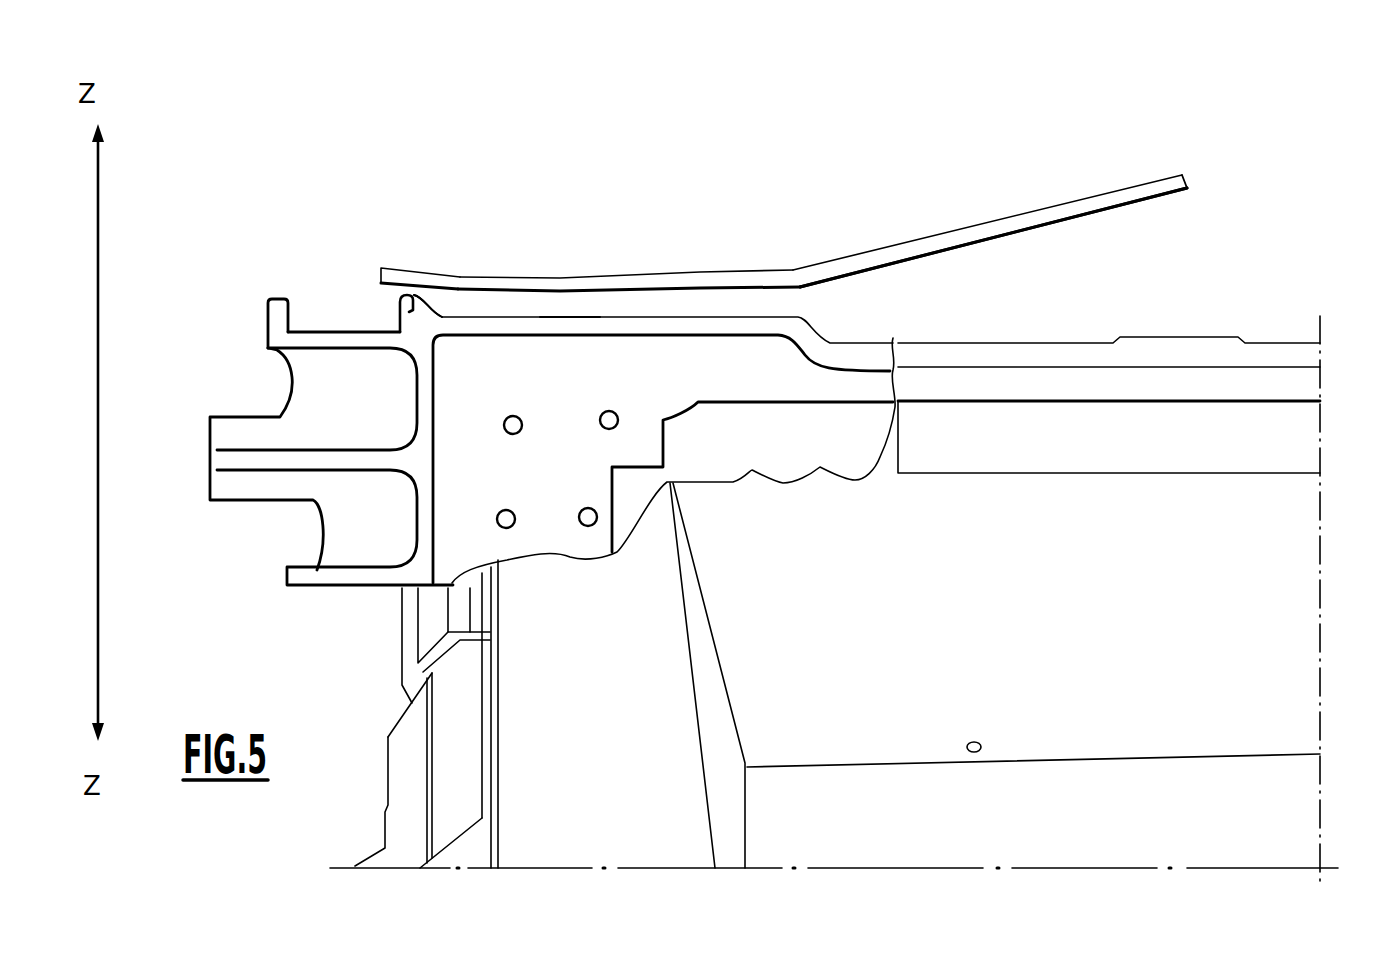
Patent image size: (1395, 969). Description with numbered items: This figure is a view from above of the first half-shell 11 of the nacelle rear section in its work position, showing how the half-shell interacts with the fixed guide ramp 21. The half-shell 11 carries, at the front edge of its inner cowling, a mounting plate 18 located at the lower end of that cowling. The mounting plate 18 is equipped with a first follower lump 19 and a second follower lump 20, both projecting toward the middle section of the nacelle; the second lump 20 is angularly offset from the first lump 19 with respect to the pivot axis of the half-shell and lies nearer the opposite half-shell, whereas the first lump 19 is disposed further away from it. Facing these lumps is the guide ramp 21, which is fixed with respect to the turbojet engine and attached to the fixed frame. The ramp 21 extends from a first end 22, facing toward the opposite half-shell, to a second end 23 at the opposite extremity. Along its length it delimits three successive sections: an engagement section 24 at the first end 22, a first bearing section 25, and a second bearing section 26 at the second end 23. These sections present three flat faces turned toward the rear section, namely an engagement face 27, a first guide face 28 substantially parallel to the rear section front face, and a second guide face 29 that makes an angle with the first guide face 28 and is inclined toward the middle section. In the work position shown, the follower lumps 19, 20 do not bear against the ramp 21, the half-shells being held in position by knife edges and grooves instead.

The first half-shell 11 is at (1218, 652).
The mounting plate 18 is at (367, 530).
The first follower lump 19 is at (398, 305).
The second follower lump 20 is at (270, 313).
The guide ramp 21 is at (757, 245).
The first end 22 is at (378, 262).
The second end 23 is at (1192, 178).
The engagement section 24 is at (433, 298).
The first bearing section 25 is at (562, 302).
The second bearing section 26 is at (947, 253).
The engagement face 27 is at (440, 292).
The first guide face 28 is at (568, 299).
The second guide face 29 is at (958, 256).